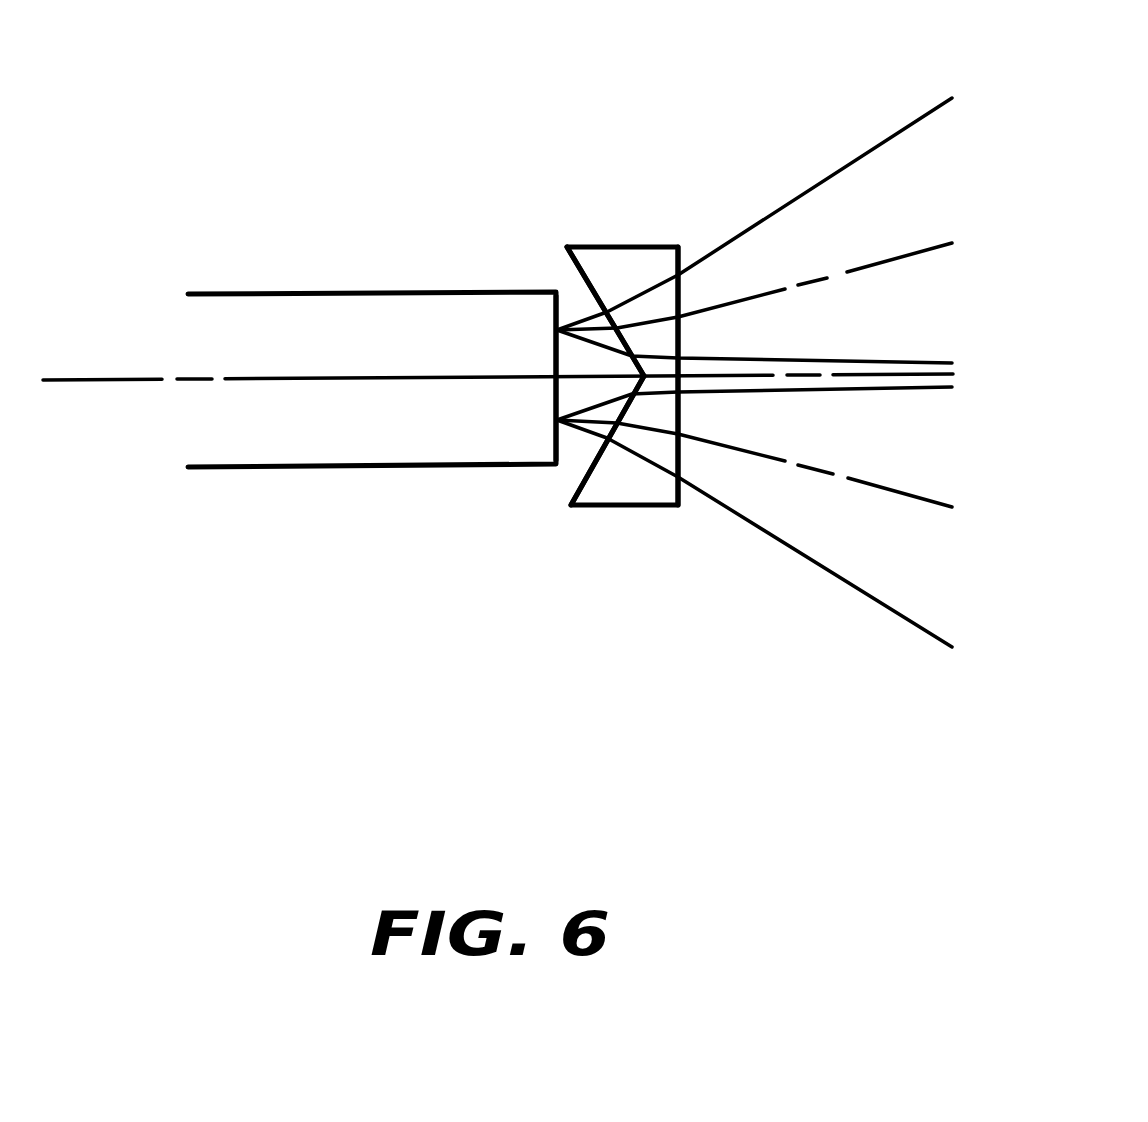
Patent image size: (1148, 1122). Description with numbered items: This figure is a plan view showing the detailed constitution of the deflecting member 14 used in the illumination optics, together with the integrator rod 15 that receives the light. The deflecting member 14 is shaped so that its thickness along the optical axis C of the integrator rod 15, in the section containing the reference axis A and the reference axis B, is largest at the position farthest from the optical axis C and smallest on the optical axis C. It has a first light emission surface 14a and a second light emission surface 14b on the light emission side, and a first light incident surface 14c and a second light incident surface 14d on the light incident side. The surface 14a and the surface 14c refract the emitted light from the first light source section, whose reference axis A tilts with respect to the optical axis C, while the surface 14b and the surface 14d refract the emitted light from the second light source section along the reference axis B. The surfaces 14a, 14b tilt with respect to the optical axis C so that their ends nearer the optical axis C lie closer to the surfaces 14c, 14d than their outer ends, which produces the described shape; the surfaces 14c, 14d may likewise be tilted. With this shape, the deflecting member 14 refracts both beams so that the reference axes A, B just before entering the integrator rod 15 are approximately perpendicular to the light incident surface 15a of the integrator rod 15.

The deflecting member 14 is at (646, 326).
The first light emission surface 14a is at (566, 249).
The second light emission surface 14b is at (572, 503).
The first light incident surface 14c is at (679, 265).
The second light incident surface 14d is at (680, 498).
The integrator rod 15 is at (372, 445).
The light incident surface of the integrator rod 15a is at (558, 330).
The reference axis of the first light source section A is at (871, 266).
The reference axis of the second light source section B is at (877, 486).
The optical axis of the integrator rod C is at (265, 378).